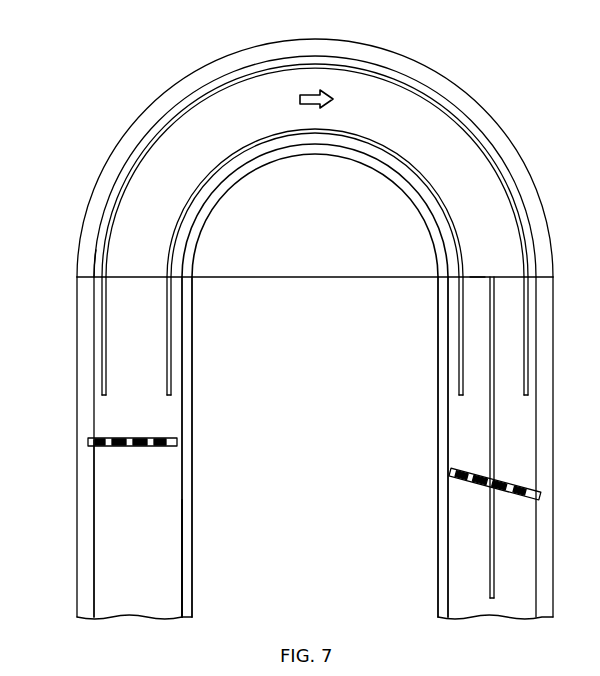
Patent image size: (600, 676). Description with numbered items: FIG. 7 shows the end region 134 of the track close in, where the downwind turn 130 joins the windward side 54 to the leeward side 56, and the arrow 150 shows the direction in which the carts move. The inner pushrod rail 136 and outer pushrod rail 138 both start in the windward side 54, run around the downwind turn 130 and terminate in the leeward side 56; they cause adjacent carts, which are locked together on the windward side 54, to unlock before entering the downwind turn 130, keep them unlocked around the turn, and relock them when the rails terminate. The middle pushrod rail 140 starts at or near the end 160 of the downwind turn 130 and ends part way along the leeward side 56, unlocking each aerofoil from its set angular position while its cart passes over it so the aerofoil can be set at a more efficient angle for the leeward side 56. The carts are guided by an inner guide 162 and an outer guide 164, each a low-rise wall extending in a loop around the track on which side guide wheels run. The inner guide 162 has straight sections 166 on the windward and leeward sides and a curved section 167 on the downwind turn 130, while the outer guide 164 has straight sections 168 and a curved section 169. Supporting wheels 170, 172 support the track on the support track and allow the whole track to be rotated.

The windward side 54 is at (142, 620).
The leeward side 56 is at (485, 620).
The downwind turn 130 is at (486, 112).
The end region 134 is at (455, 63).
The inner pushrod rail 136 is at (377, 138).
The outer pushrod rail 138 is at (425, 101).
The middle pushrod rail 140 is at (489, 414).
The arrow 150 is at (318, 97).
The end of the downwind turn 160 is at (477, 278).
The inner guide 162 is at (183, 576).
The outer guide 164 is at (92, 573).
The straight sections 166 is at (183, 521).
The curved sections 167 is at (215, 189).
The straight sections 168 is at (92, 297).
The curved sections 169 is at (95, 253).
The supporting wheel 170 is at (141, 448).
The supporting wheel 172 is at (477, 478).